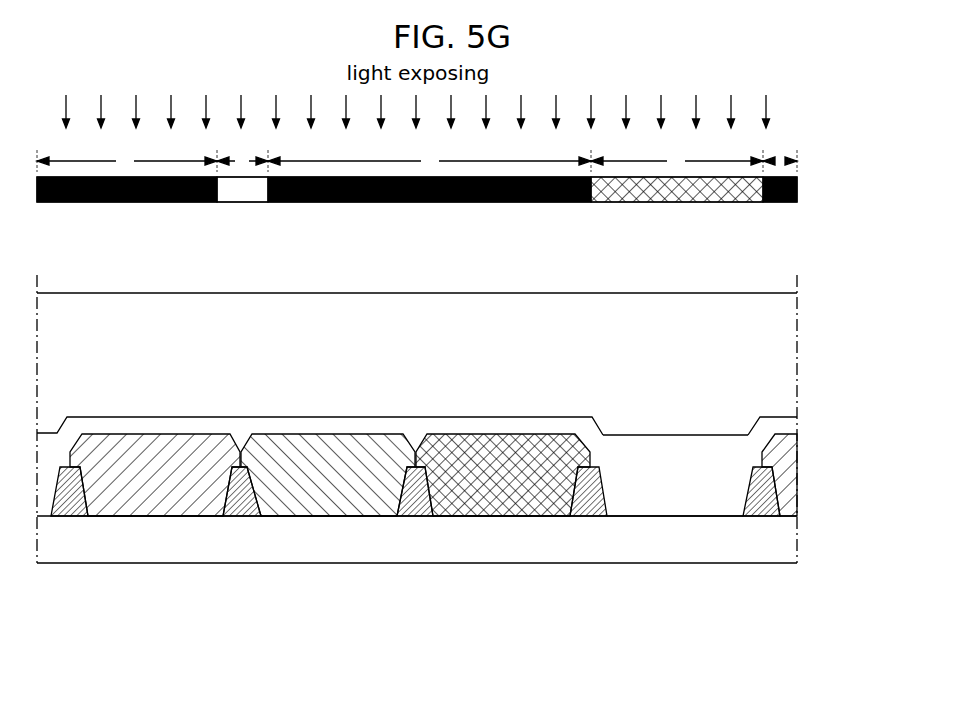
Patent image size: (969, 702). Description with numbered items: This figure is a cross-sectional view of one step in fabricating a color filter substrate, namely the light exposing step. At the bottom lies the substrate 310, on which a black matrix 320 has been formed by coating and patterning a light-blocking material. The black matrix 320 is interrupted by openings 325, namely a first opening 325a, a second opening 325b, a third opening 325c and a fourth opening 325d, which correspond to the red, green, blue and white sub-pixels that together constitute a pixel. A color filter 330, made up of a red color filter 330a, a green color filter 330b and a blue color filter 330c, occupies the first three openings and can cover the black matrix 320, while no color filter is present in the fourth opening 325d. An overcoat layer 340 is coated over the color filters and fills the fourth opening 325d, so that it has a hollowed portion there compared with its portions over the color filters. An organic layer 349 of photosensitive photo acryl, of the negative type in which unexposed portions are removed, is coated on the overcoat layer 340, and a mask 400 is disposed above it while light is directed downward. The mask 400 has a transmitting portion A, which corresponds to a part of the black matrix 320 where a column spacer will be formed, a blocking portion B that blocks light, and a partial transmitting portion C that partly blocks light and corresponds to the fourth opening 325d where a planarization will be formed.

The substrate 310 is at (351, 552).
The black matrix 320 is at (778, 498).
The openings 325 is at (415, 580).
The first opening 325a is at (148, 501).
The second opening 325b is at (315, 501).
The third opening 325c is at (503, 501).
The fourth opening 325d is at (673, 501).
The color filter 330 is at (330, 411).
The red color filter 330a is at (153, 446).
The green color filter 330b is at (332, 434).
The blue color filter 330c is at (503, 434).
The overcoat layer 340 is at (667, 447).
The organic layer 349 is at (773, 350).
The mask 400 is at (802, 196).